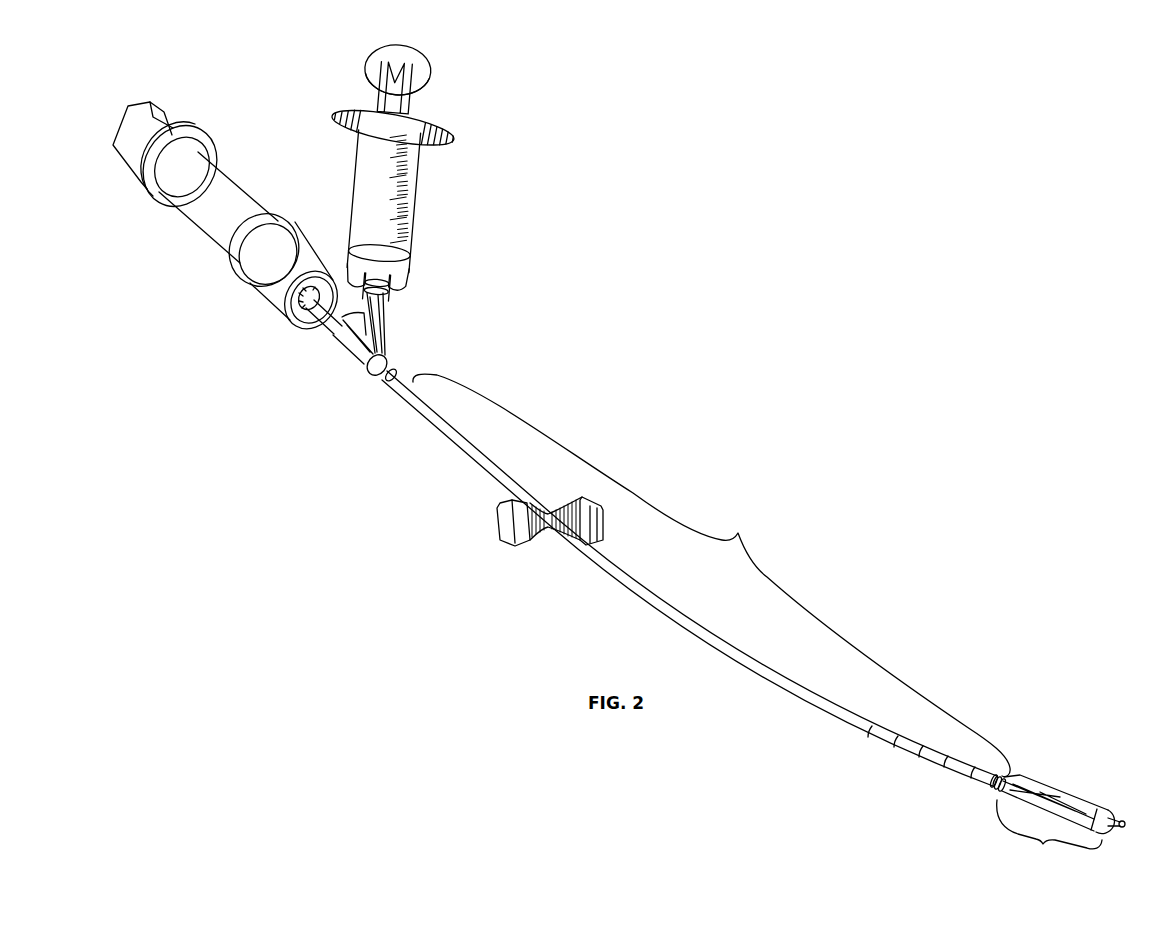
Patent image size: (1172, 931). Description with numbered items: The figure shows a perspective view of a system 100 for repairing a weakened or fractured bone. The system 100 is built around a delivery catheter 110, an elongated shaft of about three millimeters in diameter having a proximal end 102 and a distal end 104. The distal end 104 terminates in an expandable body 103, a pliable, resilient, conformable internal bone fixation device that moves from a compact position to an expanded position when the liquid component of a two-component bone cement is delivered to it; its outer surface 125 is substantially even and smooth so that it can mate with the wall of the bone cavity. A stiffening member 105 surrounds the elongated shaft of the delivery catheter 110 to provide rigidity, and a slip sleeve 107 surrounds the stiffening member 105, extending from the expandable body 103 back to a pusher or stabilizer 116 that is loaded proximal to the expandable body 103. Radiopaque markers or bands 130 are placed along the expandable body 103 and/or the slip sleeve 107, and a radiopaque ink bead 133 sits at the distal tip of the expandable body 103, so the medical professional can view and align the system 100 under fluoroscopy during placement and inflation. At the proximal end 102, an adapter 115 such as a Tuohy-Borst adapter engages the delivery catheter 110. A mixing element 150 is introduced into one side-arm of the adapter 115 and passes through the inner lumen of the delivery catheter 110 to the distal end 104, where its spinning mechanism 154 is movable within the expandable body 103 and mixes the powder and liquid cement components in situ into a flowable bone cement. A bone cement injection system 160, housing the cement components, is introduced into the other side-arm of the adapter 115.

The system 100 is at (633, 114).
The bone cement injection system 160 is at (418, 213).
The mixing element 150 is at (228, 215).
The adapter 115 is at (355, 362).
The proximal end 102 is at (392, 376).
The stiffening member 105 is at (447, 436).
The pusher or stabilizer 116 is at (517, 547).
The slip sleeve 107 is at (633, 592).
The delivery catheter 110 is at (711, 575).
The radiopaque markers or bands 130 is at (872, 731).
The distal end 104 is at (996, 780).
The outer surface 125 is at (1038, 776).
The spinning mechanism 154 is at (1063, 803).
The radiopaque ink bead 133 is at (1122, 821).
The expandable body 103 is at (1049, 838).